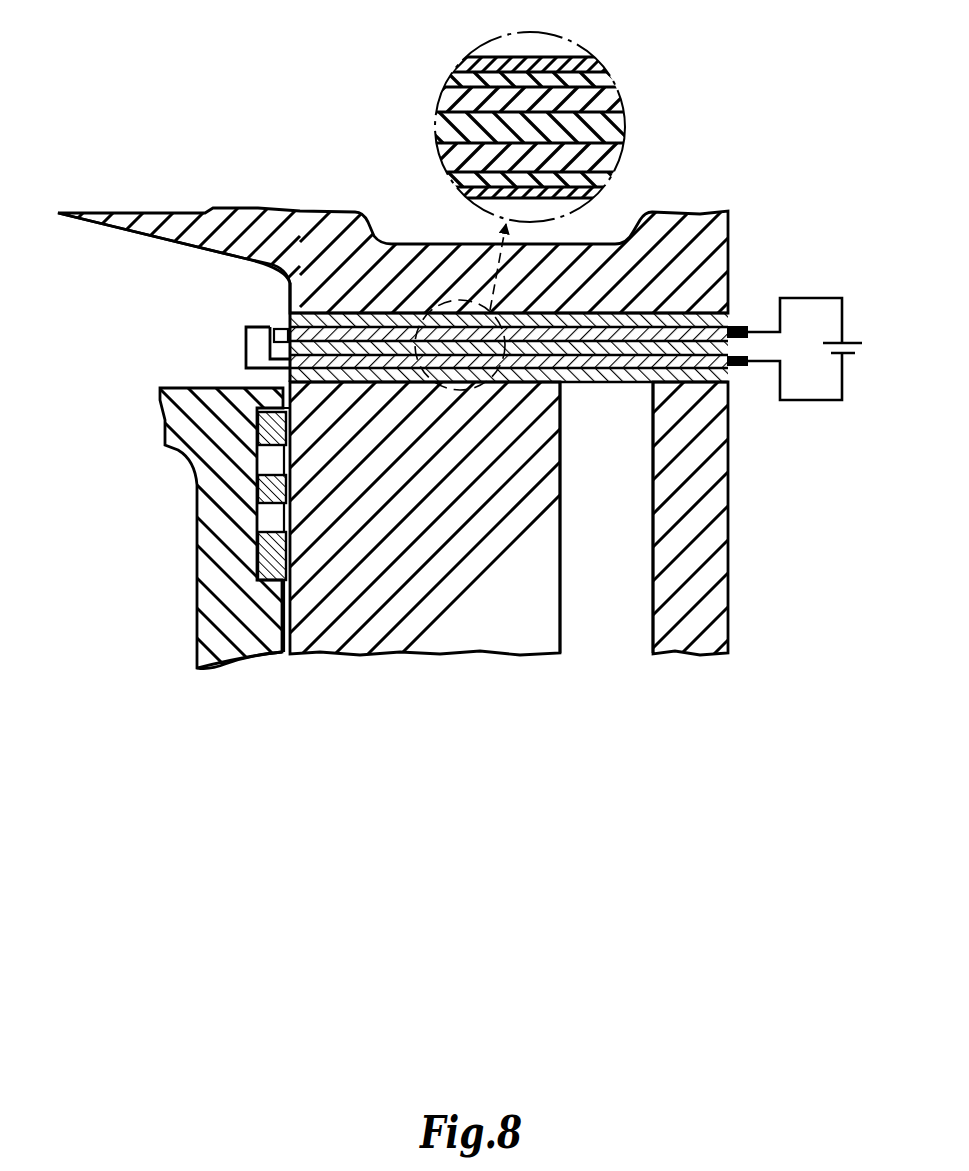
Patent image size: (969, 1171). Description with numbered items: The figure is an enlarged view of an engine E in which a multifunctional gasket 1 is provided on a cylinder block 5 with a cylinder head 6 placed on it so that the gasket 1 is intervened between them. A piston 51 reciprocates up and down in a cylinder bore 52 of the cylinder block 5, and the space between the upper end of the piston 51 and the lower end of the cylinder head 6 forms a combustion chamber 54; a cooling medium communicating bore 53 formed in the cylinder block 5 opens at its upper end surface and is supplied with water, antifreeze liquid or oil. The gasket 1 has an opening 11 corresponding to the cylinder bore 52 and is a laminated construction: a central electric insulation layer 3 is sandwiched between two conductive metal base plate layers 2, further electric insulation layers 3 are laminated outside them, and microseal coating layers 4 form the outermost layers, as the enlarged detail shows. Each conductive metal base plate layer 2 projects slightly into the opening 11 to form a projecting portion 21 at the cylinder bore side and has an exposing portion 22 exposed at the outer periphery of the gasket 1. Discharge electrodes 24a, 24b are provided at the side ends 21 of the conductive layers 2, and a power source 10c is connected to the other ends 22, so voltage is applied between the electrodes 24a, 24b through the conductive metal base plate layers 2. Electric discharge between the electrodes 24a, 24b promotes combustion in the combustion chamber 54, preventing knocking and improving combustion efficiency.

The multifunctional gasket 1 is at (606, 397).
The conductive metal base plate layer 2 is at (607, 102).
The electric insulation layer 3 is at (593, 73).
The microseal coating layer 4 is at (468, 62).
The cylinder block 5 is at (422, 632).
The cylinder head 6 is at (705, 238).
The power source 10c is at (852, 342).
The opening 11 is at (238, 298).
The projecting portion 21 is at (289, 363).
The exposing portion 22 is at (742, 326).
The discharge electrode 24a is at (267, 348).
The discharge electrode 24b is at (242, 334).
The piston 51 is at (200, 643).
The cylinder bore 52 is at (178, 597).
The cooling medium communicating bore 53 is at (617, 640).
The combustion chamber 54 is at (147, 259).
The engine E is at (186, 532).